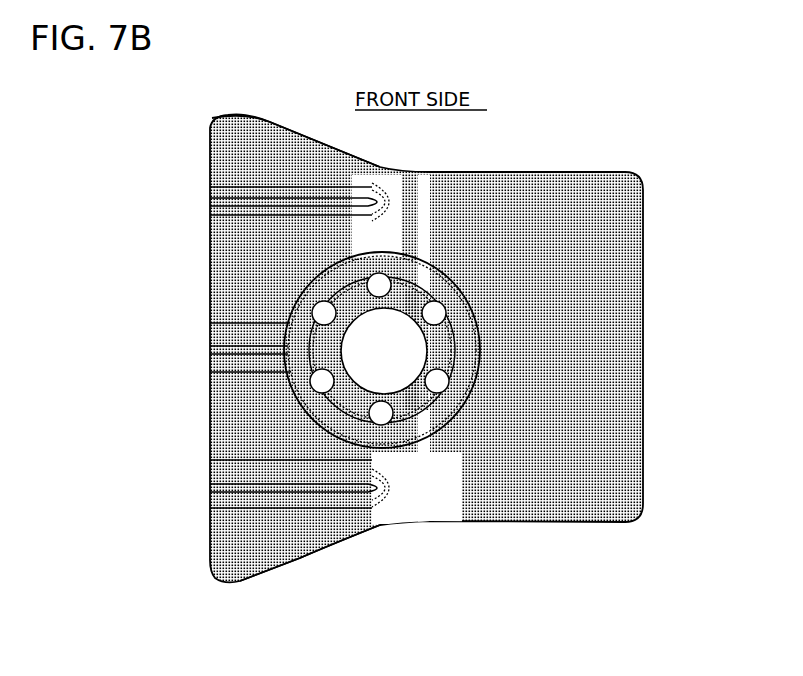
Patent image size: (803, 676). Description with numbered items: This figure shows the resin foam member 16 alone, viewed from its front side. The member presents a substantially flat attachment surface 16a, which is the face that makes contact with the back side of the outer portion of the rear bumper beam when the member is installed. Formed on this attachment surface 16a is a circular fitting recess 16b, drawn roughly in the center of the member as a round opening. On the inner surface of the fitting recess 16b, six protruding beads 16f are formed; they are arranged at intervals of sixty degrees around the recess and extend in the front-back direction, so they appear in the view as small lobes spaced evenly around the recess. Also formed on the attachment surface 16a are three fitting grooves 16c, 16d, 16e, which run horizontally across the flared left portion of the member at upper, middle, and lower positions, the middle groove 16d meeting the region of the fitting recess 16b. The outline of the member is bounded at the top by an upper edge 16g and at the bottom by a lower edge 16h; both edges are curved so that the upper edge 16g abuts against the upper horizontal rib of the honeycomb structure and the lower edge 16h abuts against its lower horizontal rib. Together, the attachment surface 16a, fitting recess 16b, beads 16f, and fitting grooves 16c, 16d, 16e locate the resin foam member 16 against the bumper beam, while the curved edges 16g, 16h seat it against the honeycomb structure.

The resin foam member 16 is at (540, 166).
The attachment surface 16a is at (603, 343).
The fitting recess 16b is at (403, 361).
The fitting groove 16c is at (216, 212).
The fitting groove 16d is at (216, 350).
The fitting groove 16e is at (216, 490).
The beads 16f is at (410, 300).
The upper edge 16g is at (300, 138).
The lower edge 16h is at (305, 550).